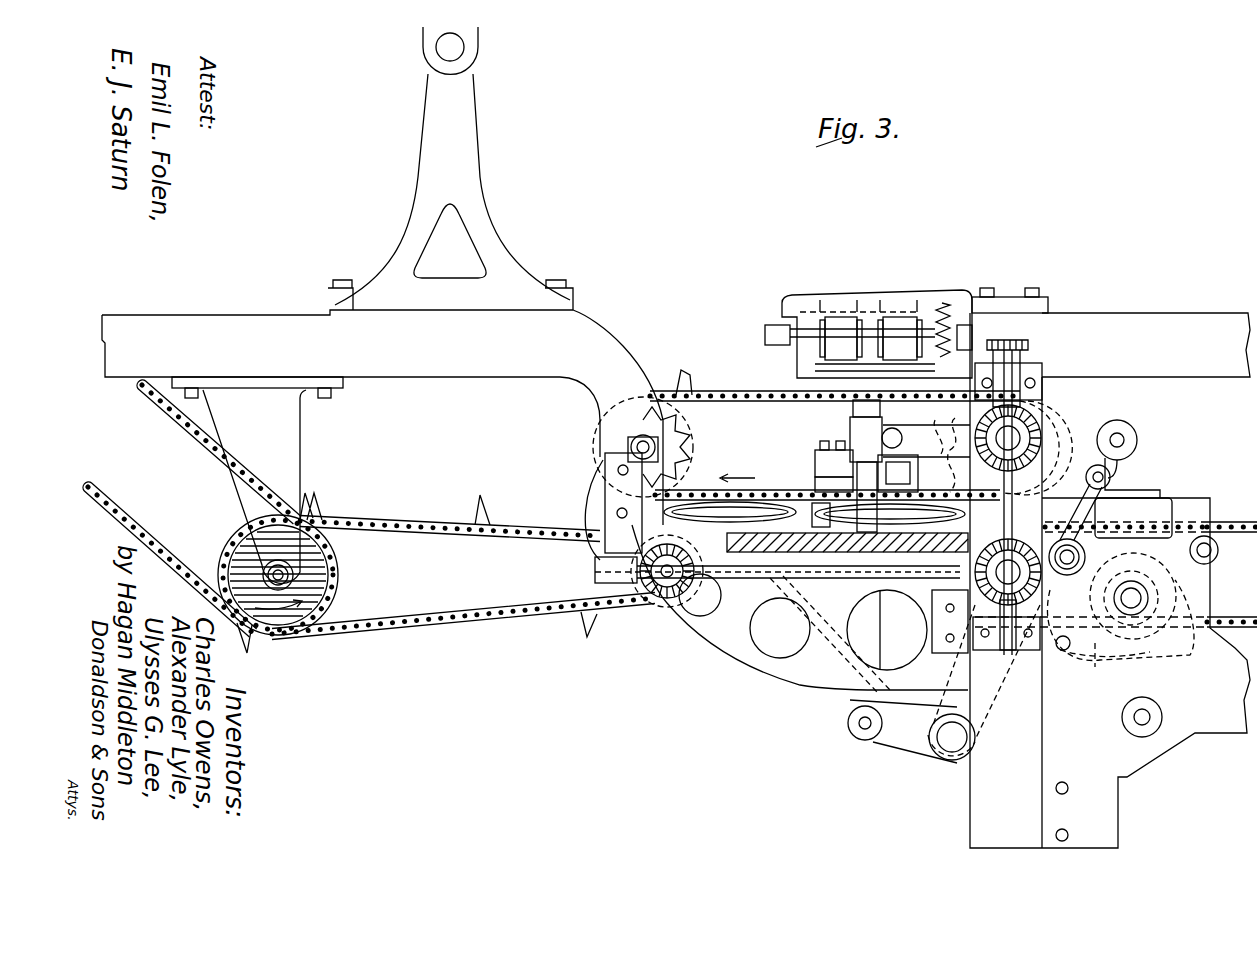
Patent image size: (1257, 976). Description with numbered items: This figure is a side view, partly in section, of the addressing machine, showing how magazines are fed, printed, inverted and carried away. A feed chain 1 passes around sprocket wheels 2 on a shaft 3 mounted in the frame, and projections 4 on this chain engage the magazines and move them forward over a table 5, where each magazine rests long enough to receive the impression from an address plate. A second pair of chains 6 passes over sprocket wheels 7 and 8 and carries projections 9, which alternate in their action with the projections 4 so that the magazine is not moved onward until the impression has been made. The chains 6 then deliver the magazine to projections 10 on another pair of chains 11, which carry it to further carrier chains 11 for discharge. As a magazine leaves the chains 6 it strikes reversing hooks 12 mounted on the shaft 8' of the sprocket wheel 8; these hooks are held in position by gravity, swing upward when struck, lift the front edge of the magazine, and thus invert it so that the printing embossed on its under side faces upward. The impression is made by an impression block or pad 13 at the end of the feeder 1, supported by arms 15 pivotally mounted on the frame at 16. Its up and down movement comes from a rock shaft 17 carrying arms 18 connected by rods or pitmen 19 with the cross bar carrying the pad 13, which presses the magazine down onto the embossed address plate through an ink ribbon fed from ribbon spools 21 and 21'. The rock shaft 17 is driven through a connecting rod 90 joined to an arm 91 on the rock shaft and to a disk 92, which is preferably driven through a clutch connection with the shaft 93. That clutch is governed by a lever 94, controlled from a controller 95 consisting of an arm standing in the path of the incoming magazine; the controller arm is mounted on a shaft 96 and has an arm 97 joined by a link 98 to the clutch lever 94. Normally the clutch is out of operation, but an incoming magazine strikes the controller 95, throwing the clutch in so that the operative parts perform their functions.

The feed chain 1 is at (1212, 526).
The sprocket wheels 2 is at (1080, 616).
The shaft 3 is at (1015, 571).
The projections 4 is at (1178, 650).
The table 5 is at (765, 553).
The second pair of chains 6 is at (790, 398).
The sprocket wheel 7 is at (1050, 430).
The sprocket or chain wheel 8 is at (651, 447).
The shaft 8' is at (674, 456).
The projections 9 is at (685, 386).
The projections 10 is at (488, 528).
The chains 11 is at (218, 462).
The reversing hooks 12 is at (600, 515).
The impression block or pad 13 is at (818, 460).
The arms 15 is at (947, 440).
The pivot 16 is at (1126, 432).
The rock shaft 17 is at (950, 745).
The arms 18 is at (900, 742).
The rods or pitmen 19 is at (863, 637).
The ribbon spool 21 is at (841, 311).
The ribbon spool 21' is at (902, 309).
The connecting rod 90 is at (1133, 596).
The arm 91 is at (984, 711).
The disk 92 is at (1212, 559).
The shaft 93 is at (1140, 596).
The lever 94 is at (1105, 669).
The controller 95 is at (1098, 512).
The shaft 96 is at (1112, 477).
The arm 97 is at (1100, 470).
The link 98 is at (1076, 530).